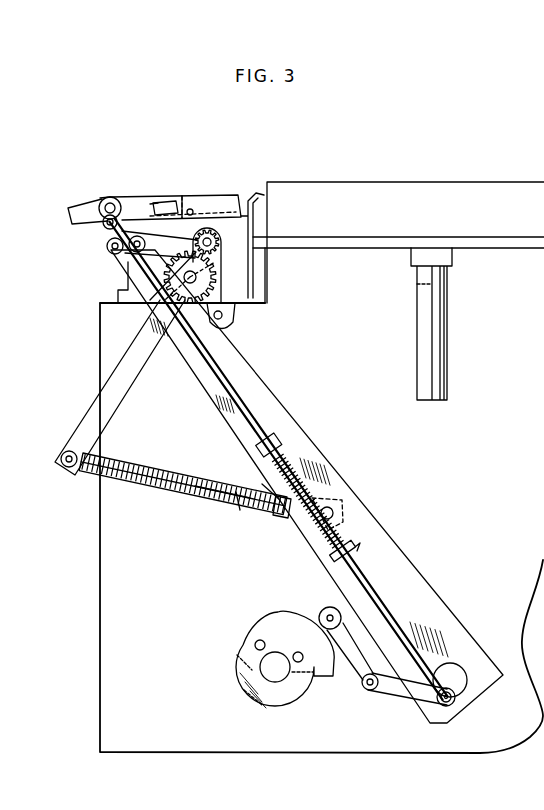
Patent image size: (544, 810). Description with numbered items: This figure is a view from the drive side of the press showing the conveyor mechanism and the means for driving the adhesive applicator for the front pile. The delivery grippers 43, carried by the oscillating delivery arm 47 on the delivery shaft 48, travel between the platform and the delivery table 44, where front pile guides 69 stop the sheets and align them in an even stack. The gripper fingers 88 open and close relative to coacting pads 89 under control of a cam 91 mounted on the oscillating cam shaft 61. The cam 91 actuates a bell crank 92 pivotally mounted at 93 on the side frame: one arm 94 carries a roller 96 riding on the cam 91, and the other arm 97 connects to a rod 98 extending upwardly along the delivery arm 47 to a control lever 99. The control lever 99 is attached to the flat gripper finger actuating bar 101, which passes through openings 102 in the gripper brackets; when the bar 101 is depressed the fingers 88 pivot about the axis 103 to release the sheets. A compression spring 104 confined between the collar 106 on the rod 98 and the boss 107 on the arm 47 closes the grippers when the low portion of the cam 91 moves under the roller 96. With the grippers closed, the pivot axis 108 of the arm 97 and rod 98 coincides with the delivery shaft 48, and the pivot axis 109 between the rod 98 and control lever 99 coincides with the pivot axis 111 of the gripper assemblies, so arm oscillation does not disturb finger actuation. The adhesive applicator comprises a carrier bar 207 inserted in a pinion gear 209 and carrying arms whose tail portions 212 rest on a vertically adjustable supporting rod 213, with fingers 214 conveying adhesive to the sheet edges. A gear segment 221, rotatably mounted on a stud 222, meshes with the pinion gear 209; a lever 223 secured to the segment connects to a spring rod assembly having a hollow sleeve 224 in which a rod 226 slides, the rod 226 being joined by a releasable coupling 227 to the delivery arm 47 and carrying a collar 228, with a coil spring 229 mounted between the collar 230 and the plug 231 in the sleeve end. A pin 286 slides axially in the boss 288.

The delivery grippers 43 is at (140, 197).
The delivery table 44 is at (487, 240).
The delivery arm 47 is at (260, 398).
The delivery shaft 48 is at (452, 677).
The oscillating cam shaft 61 is at (260, 667).
The front pile guides 69 is at (256, 221).
The gripper fingers 88 is at (233, 198).
The pads 89 is at (217, 246).
The cam 91 is at (288, 620).
The bell crank 92 is at (371, 690).
The pivot 93 is at (365, 688).
The arm of the bell crank 94 is at (352, 657).
The roller 96 is at (325, 609).
The arm of the bell crank 97 is at (412, 693).
The rod 98 is at (373, 593).
The control lever 99 is at (128, 205).
The gripper finger actuating bar 101 is at (172, 202).
The openings 102 is at (157, 202).
The axis 103 is at (193, 210).
The compression spring 104 is at (302, 477).
The collar 106 is at (276, 441).
The boss 107 is at (357, 547).
The pivot axis 108 is at (455, 702).
The pivot axis 109 is at (105, 224).
The pivot axis of the gripper assemblies 111 is at (100, 205).
The carrier bar 207 is at (173, 257).
The pinion gear 209 is at (222, 259).
The tail portions 212 is at (70, 219).
The supporting rod 213 is at (110, 251).
The fingers 214 is at (268, 296).
The gear segment 221 is at (233, 308).
The stud 222 is at (185, 268).
The lever 223 is at (115, 388).
The hollow sleeve 224 is at (147, 485).
The rod 226 is at (239, 499).
The releasable coupling 227 is at (342, 506).
The collar 228 is at (280, 516).
The coil spring 229 is at (203, 495).
The collar 230 is at (70, 468).
The plug 231 is at (270, 490).
The pin 286 is at (231, 324).
The boss 288 is at (223, 316).